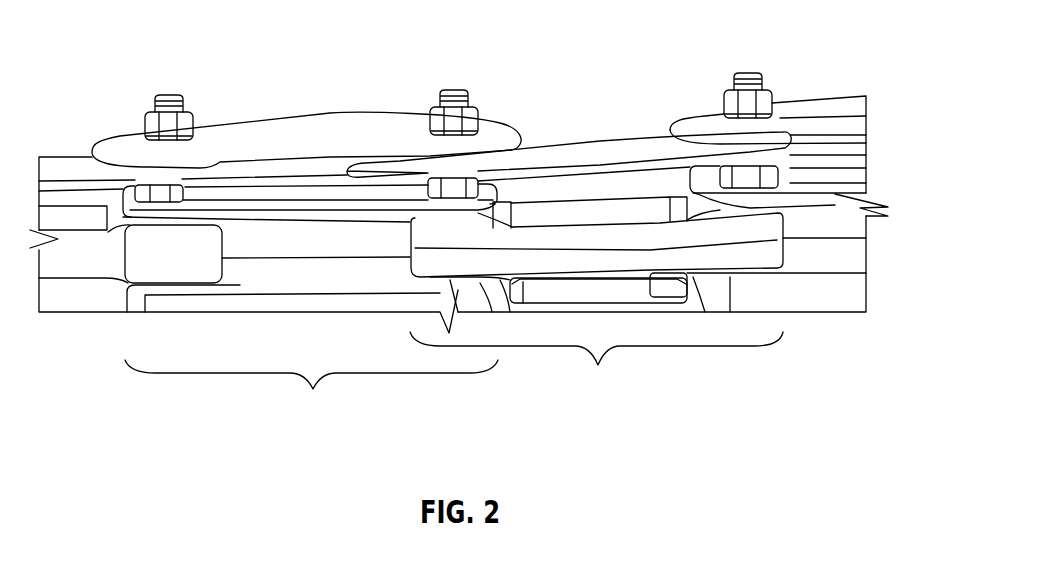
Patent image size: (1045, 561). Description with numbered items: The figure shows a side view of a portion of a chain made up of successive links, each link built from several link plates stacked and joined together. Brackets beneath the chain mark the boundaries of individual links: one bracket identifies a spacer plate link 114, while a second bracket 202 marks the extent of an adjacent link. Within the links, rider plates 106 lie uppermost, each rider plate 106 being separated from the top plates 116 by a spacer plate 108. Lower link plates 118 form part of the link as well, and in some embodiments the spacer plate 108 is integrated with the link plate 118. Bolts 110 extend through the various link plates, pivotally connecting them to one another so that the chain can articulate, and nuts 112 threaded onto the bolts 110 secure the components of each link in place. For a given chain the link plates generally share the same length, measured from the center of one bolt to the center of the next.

The rider plate 106 is at (299, 120).
The spacer plate 108 is at (589, 136).
The bolt 110 is at (168, 95).
The nut 112 is at (150, 124).
The spacer plate link 114 is at (596, 365).
The top plate 116 is at (850, 180).
The link plate 118 is at (216, 250).
The link assembly 202 is at (311, 392).